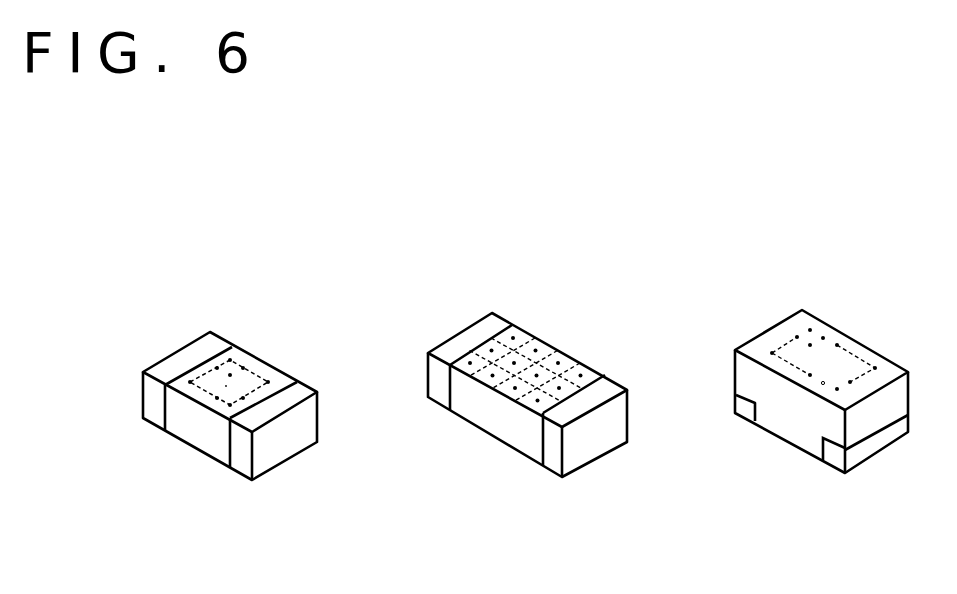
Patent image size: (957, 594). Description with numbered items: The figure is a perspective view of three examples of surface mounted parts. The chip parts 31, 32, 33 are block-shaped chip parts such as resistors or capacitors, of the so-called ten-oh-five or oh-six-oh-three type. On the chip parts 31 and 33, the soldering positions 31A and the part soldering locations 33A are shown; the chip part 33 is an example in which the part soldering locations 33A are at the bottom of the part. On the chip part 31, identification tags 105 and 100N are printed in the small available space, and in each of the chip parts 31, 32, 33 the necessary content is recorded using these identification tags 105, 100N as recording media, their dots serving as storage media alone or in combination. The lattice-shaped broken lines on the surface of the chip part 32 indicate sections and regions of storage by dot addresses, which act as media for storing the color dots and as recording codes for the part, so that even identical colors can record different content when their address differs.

The chip part 31 is at (190, 355).
The soldering position 31A is at (247, 458).
The identification tag 105 is at (230, 358).
The identification tag 100N is at (228, 407).
The chip part 32 is at (472, 335).
The chip part 33 is at (782, 332).
The part soldering location 33A is at (835, 458).